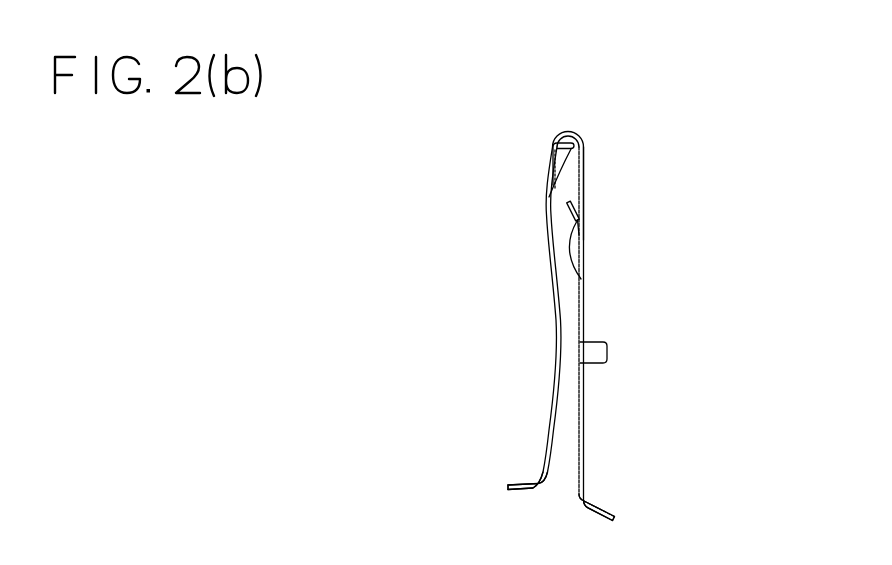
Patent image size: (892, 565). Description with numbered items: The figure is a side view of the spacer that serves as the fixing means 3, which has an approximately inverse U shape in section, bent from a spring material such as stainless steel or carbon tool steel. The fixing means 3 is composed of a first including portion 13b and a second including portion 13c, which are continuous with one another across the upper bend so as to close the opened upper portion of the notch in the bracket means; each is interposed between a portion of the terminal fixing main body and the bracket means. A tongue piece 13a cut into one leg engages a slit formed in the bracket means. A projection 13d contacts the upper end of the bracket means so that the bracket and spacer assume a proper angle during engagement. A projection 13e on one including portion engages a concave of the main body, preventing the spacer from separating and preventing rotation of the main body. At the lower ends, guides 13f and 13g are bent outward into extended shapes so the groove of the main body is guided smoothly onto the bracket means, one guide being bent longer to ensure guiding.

The fixing means 3 is at (683, 61).
The tongue piece 13a is at (584, 280).
The first including portion 13b is at (552, 160).
The second including portion 13c is at (585, 197).
The projection 13d is at (547, 191).
The projection 13e is at (607, 354).
The guide 13f is at (521, 482).
The guide 13g is at (597, 512).